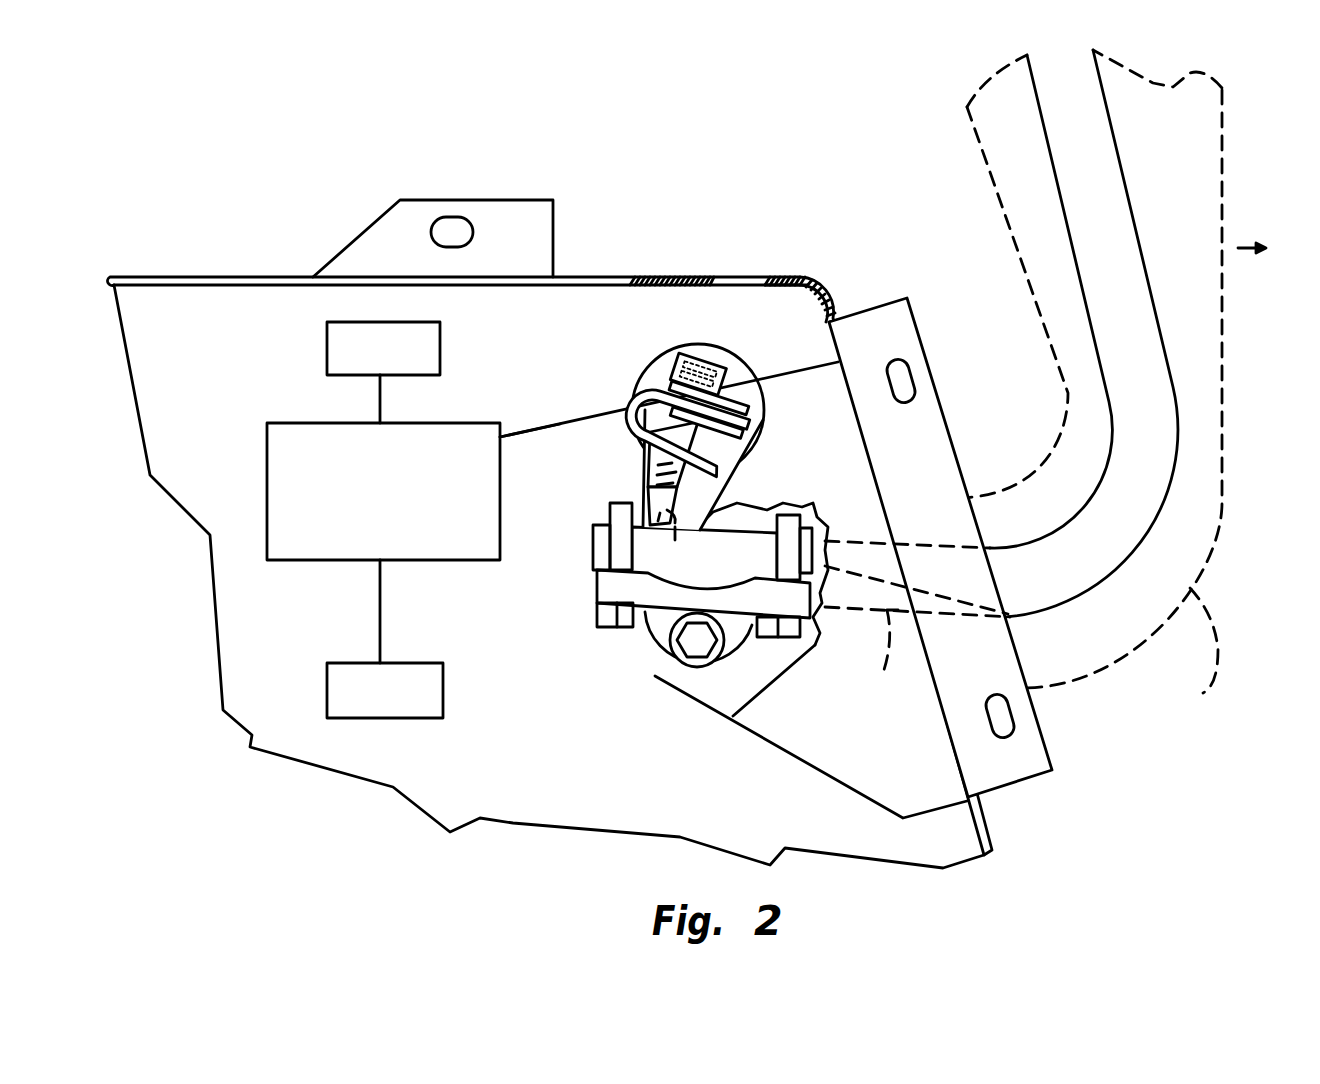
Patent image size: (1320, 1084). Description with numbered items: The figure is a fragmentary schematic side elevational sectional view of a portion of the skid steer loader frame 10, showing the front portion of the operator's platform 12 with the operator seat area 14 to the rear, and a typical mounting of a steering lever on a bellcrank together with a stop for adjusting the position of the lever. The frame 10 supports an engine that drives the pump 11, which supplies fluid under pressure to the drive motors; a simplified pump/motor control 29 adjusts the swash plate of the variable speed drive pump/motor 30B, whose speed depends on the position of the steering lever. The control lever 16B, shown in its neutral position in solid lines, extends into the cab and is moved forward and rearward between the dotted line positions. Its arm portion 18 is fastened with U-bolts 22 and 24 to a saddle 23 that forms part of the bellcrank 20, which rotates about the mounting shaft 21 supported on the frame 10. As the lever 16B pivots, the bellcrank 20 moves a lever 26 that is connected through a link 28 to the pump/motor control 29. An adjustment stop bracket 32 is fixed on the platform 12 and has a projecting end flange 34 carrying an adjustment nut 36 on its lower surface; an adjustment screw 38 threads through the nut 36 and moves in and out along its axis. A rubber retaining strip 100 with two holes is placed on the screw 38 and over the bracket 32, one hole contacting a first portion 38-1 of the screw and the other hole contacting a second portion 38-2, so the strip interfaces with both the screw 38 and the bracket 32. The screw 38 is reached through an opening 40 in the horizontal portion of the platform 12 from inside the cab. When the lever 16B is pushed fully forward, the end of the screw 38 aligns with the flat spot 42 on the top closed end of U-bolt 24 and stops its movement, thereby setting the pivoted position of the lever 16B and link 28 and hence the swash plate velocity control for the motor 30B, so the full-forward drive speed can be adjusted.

The frame 10 is at (685, 262).
The pump 11 is at (327, 348).
The platform 12 is at (833, 318).
The operator seat area 14 is at (253, 276).
The control lever 16B is at (1093, 232).
The arm portion 18 is at (878, 679).
The bellcrank 20 is at (721, 705).
The mounting shaft 21 is at (697, 642).
The U-bolt 22 is at (805, 507).
The saddle 23 is at (603, 592).
The U-bolt 24 is at (617, 545).
The lever 26 is at (670, 362).
The link 28 is at (532, 427).
The pump/motor control 29 is at (267, 478).
The motor 30B is at (352, 660).
The adjustment stop bracket 32 is at (638, 400).
The end flange 34 is at (723, 428).
The adjustment nut 36 is at (633, 430).
The adjustment screw 38 is at (708, 368).
The first portion of screw 38-1 is at (765, 392).
The second portion of screw 38-2 is at (731, 478).
The opening 40 is at (783, 247).
The flat spot 42 is at (627, 503).
The rubber retaining strip 100 is at (641, 398).